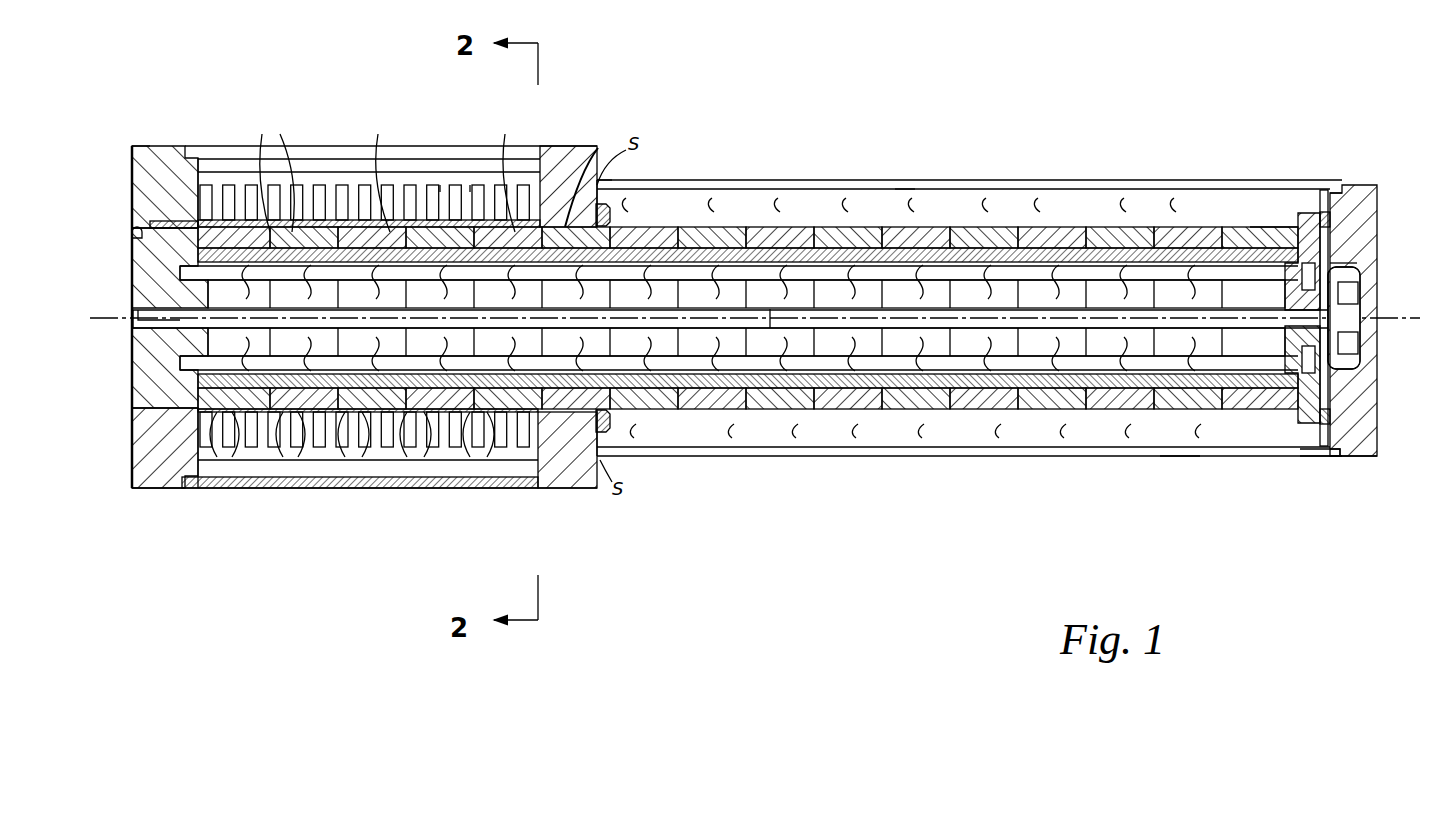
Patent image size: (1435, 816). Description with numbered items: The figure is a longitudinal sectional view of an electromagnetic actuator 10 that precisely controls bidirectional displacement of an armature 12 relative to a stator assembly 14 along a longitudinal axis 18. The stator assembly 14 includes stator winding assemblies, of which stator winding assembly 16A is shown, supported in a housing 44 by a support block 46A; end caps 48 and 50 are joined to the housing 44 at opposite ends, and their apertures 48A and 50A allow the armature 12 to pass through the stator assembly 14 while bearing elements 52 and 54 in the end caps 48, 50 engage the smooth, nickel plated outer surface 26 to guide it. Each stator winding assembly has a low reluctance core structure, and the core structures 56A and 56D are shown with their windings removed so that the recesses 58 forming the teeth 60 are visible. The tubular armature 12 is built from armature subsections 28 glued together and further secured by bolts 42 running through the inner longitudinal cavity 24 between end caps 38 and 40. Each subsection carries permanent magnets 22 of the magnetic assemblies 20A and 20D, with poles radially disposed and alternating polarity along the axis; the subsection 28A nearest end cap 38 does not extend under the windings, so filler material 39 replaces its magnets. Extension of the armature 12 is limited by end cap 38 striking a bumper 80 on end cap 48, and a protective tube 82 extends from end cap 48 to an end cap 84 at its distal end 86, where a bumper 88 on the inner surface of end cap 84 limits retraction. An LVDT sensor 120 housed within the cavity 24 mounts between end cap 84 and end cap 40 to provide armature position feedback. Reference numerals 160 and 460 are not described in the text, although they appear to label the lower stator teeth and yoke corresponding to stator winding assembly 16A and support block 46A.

The electromagnetic actuator 10 is at (905, 88).
The armature 12 is at (975, 208).
The stator assembly 14 is at (338, 72).
The stator winding assembly 16A is at (232, 168).
The lower stator teeth 160 is at (237, 457).
The longitudinal axis 18 is at (1378, 318).
The magnetic assembly 20A is at (687, 213).
The magnetic assembly 20D is at (672, 430).
The permanent magnets 22 is at (350, 232).
The inner longitudinal cavity 24 is at (1200, 297).
The outer surface 26 is at (905, 212).
The armature subsections 28 is at (665, 213).
The armature subsection 28A is at (1260, 226).
The end cap 38 is at (1336, 195).
The filler material 39 is at (1322, 208).
The end cap 40 is at (130, 252).
The bolts 42 is at (1292, 255).
The housing 44 is at (198, 146).
The support block 46A is at (408, 150).
The lower stator yoke 460 is at (425, 477).
The end cap 48 is at (598, 168).
The aperture 48A is at (607, 208).
The end cap 50 is at (138, 146).
The aperture 50A is at (140, 236).
The bearing element 52 is at (558, 200).
The bearing element 54 is at (168, 218).
The core structure 56A is at (526, 168).
The core structure 56D is at (514, 455).
The recesses 58 is at (445, 188).
The teeth 60 is at (470, 190).
The bumper 80 is at (606, 428).
The protective tube 82 is at (1178, 460).
The end cap 84 is at (1376, 432).
The distal end 86 is at (1340, 462).
The bumper 88 is at (1318, 447).
The LVDT sensor 120 is at (1340, 262).